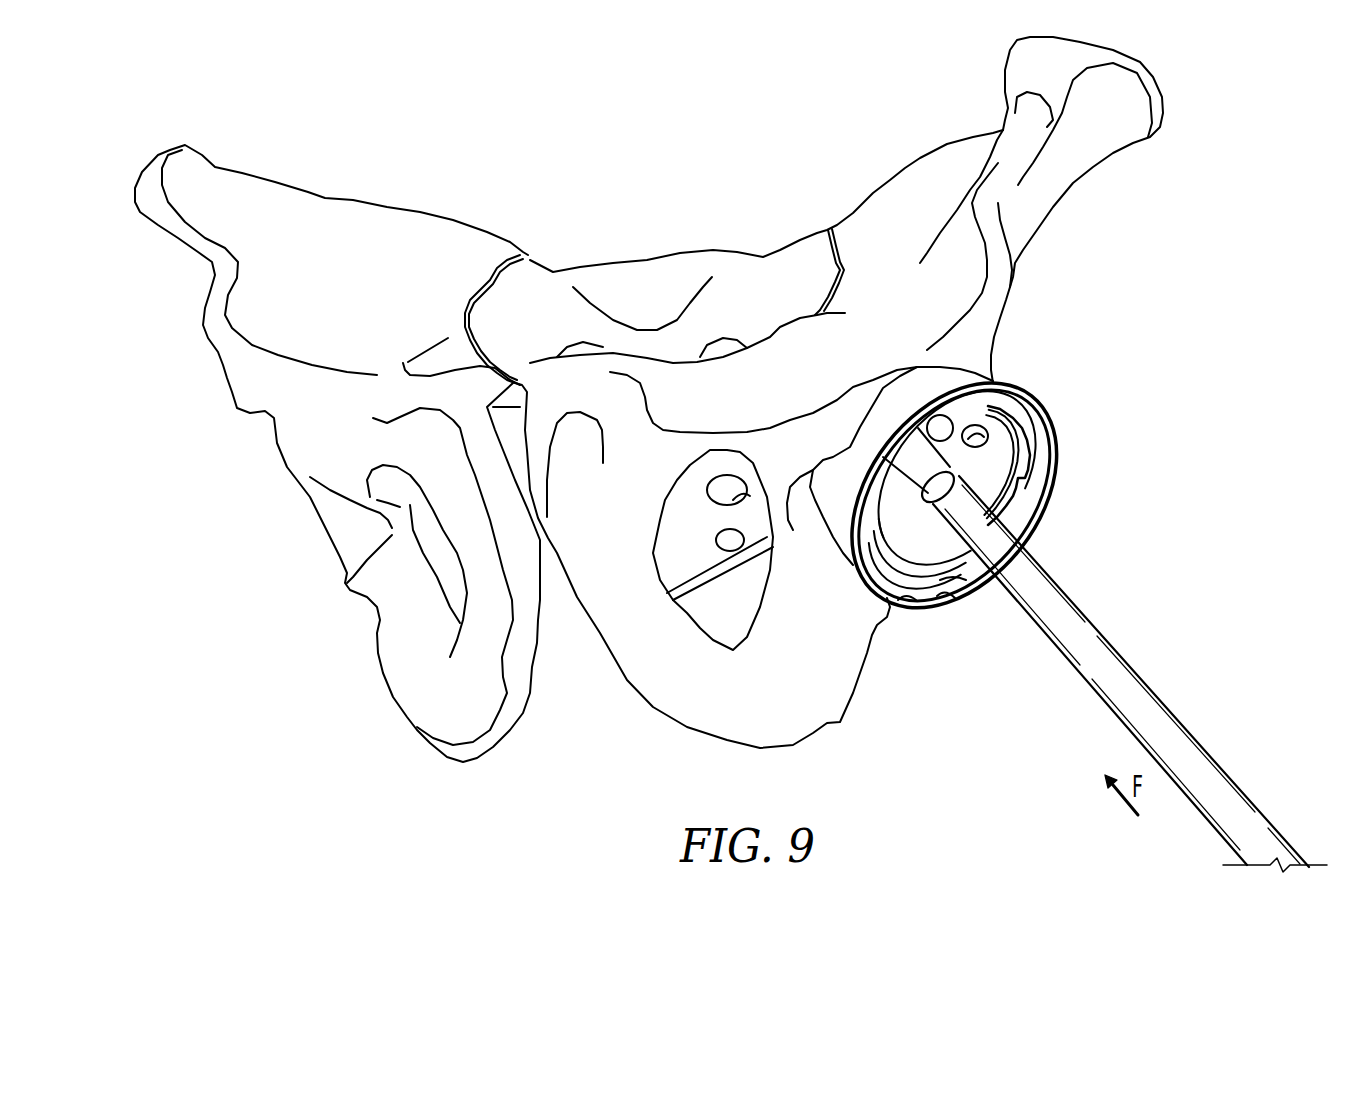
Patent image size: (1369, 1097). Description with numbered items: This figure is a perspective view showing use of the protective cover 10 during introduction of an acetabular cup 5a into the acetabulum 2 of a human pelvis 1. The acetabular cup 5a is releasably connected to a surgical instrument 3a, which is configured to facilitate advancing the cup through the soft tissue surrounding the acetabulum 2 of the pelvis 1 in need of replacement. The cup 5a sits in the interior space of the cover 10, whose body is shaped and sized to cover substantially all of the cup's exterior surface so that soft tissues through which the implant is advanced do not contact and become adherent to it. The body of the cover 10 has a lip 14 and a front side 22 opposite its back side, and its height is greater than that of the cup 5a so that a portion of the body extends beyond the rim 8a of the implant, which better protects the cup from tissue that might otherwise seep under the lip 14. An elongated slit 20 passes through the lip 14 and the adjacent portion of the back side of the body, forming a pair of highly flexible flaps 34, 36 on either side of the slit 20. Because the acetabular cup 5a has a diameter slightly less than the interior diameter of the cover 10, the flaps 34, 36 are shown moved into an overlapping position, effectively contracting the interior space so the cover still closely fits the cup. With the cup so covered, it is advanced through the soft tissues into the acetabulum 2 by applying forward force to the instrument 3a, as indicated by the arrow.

The pelvis 1 is at (306, 259).
The acetabulum 2 is at (960, 383).
The protective cover 10 is at (1122, 366).
The lip 14 is at (1058, 478).
The front side 22 is at (980, 368).
The locking tab 8a is at (1031, 440).
The acetabular cup 5a is at (1012, 492).
The surgical instrument 3a is at (1160, 730).
The flap 34 is at (953, 578).
The slit 20 is at (955, 600).
The flap 36 is at (906, 612).